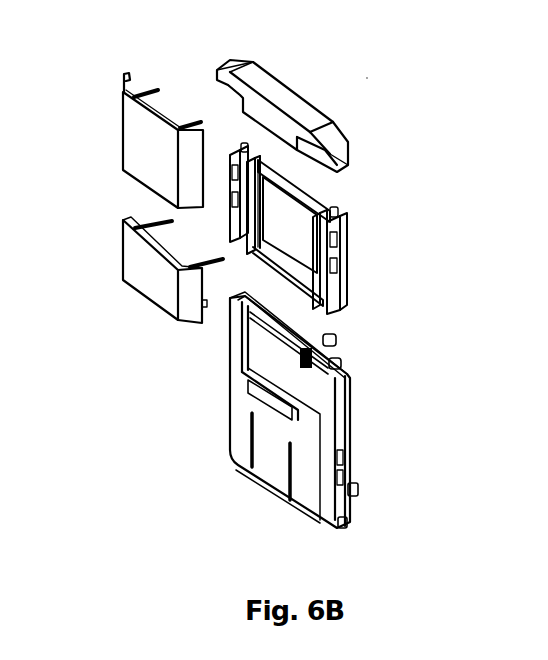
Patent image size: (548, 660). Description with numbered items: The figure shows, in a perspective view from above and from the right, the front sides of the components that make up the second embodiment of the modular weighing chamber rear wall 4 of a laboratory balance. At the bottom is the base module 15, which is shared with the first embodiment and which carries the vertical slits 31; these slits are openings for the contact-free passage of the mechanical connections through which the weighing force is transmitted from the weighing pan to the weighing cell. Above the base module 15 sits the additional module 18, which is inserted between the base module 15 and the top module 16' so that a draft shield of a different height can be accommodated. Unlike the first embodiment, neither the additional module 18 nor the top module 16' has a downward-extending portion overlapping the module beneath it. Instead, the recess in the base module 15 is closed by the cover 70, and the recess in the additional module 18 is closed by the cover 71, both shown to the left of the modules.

The weighing chamber rear wall 4 is at (367, 78).
The cover 71 is at (108, 129).
The cover 70 is at (117, 257).
The top module 16' is at (343, 116).
The additional module 18 is at (348, 265).
The base module 15 is at (357, 428).
The vertical slits 31 is at (251, 480).